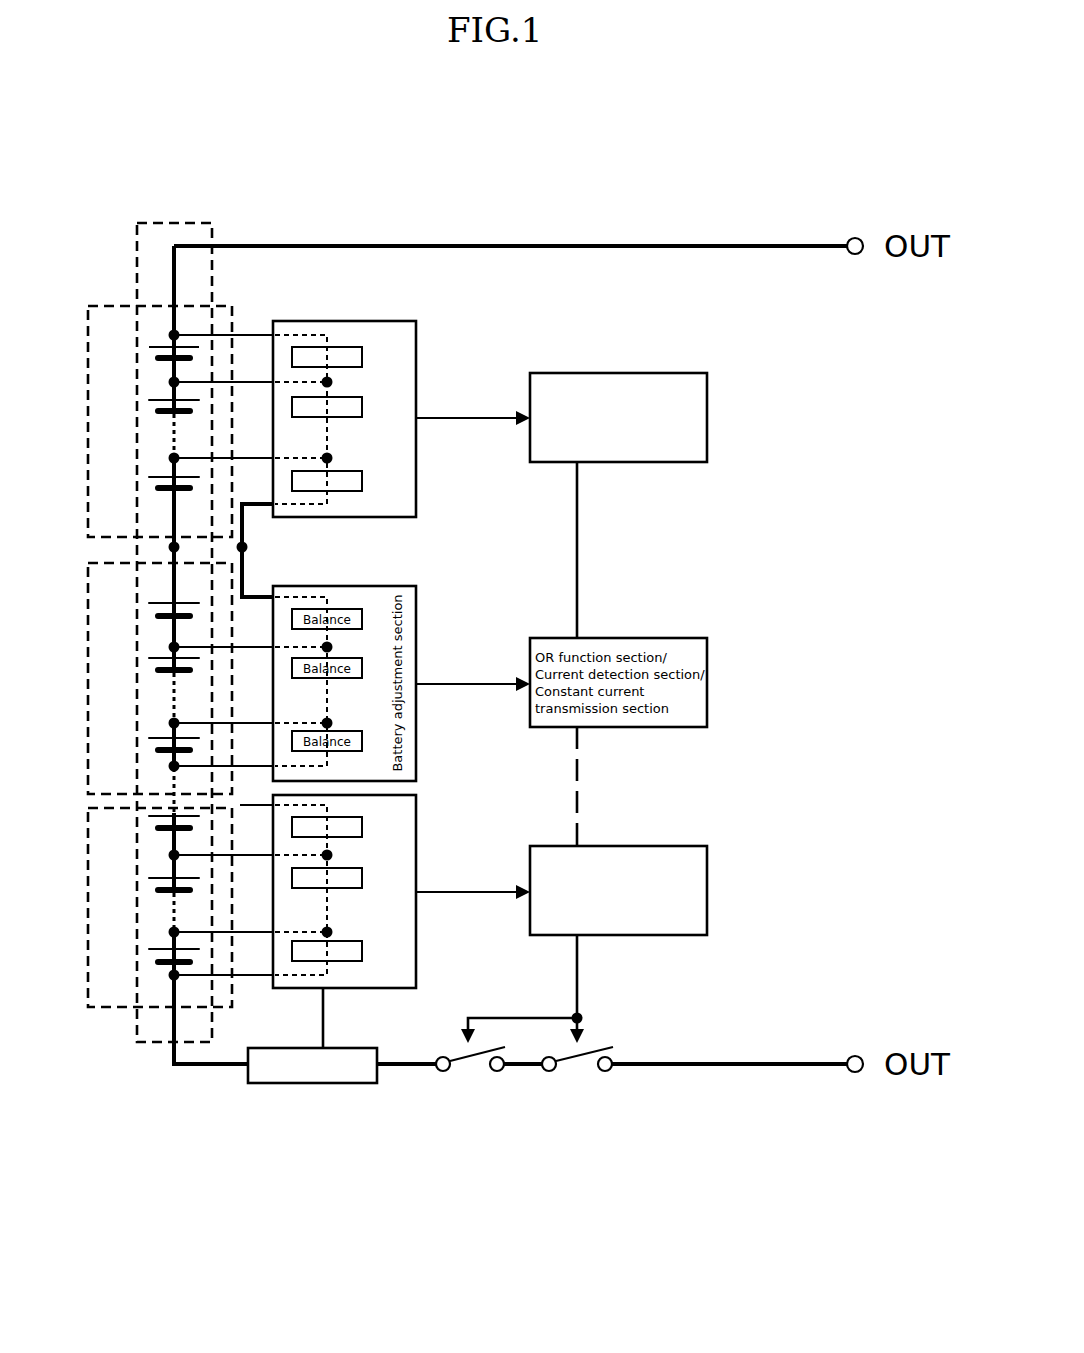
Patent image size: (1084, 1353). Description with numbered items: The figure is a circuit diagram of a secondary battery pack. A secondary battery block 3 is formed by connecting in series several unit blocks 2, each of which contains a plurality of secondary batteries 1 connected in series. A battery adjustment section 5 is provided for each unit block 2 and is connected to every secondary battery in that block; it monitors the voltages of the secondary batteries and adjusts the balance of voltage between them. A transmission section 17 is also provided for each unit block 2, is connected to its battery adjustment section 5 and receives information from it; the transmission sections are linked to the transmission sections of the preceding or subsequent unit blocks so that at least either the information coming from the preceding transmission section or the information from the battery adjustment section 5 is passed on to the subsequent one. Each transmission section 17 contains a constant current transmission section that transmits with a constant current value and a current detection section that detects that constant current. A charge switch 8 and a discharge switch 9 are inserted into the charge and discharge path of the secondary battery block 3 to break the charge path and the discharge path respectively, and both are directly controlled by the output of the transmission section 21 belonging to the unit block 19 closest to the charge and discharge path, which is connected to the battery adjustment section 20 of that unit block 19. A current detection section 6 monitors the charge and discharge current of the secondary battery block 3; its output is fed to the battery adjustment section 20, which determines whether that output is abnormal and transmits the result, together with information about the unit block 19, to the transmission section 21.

The secondary battery 1 is at (162, 340).
The unit block 2 is at (232, 320).
The secondary battery block 3 is at (182, 232).
The battery adjustment section 5 is at (345, 320).
The current detection section 6 is at (313, 1083).
The charge switch 8 is at (580, 1075).
The discharge switch 9 is at (473, 1075).
The transmission section 17 is at (707, 408).
The unit block 19 is at (110, 990).
The battery adjustment section 20 is at (362, 983).
The transmission section 21 is at (707, 882).